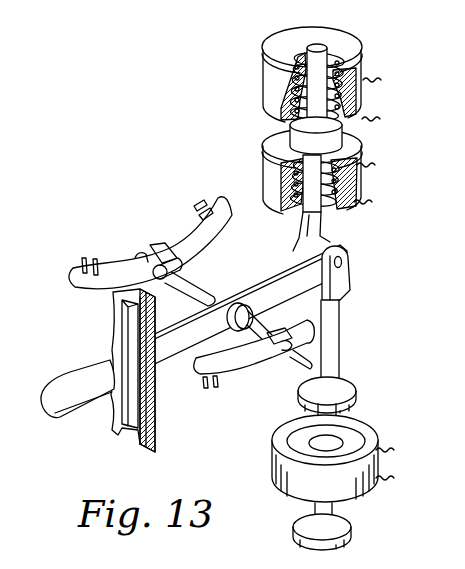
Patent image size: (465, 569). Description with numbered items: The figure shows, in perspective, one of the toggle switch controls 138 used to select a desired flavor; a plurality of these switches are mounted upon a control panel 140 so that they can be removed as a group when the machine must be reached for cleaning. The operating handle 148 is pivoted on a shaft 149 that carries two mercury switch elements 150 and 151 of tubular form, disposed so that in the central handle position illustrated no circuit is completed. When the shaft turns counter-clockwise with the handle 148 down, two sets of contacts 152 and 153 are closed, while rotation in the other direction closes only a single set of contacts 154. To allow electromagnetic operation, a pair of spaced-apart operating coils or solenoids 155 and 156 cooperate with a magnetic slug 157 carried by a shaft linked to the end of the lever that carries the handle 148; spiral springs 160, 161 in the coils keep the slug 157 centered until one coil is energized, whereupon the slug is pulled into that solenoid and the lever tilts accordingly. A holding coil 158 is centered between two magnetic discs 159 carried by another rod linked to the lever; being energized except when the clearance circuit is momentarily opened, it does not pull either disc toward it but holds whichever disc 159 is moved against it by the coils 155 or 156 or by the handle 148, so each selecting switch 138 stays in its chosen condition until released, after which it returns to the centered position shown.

The toggle switch control 138 is at (167, 141).
The control panel 140 is at (124, 438).
The operating handle 148 is at (63, 380).
The shaft 149 is at (212, 293).
The mercury switch element 150 is at (128, 262).
The mercury switch element 151 is at (248, 369).
The set of contacts 152 is at (90, 260).
The set of contacts 153 is at (210, 390).
The set of contacts 154 is at (201, 203).
The operating coil 155 is at (346, 46).
The operating coil 156 is at (352, 143).
The magnetic slug 157 is at (300, 137).
The holding coil 158 is at (360, 439).
The magnetic disc 159 is at (345, 390).
The spiral spring 160 is at (290, 92).
The spiral spring 161 is at (340, 178).